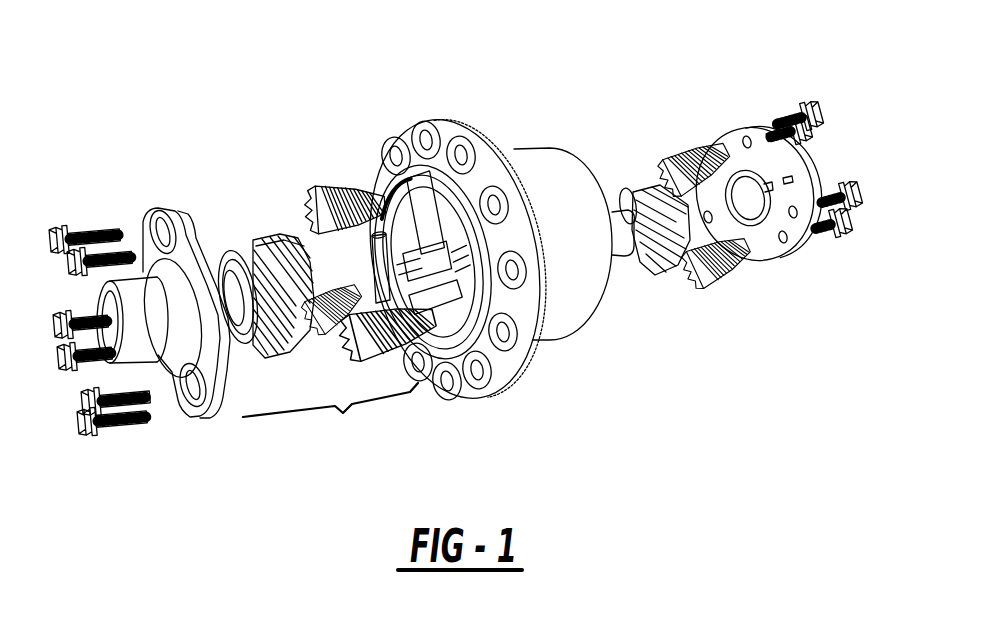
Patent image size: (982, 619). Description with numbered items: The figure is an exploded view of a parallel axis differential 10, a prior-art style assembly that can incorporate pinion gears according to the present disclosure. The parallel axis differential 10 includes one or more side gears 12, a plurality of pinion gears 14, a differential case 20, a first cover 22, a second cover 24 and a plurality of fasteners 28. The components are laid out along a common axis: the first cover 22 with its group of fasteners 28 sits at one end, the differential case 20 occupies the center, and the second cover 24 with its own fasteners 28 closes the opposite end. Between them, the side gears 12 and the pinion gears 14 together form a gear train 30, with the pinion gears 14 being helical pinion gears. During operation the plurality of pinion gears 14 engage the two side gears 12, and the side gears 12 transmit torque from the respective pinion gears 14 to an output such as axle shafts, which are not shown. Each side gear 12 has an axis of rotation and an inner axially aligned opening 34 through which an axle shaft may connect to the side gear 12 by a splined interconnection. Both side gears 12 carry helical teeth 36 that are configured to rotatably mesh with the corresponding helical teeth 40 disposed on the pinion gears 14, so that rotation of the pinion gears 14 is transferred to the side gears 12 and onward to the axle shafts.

The parallel axis differential 10 is at (538, 62).
The side gear 12 is at (617, 207).
The pinion gear 14 is at (326, 198).
The differential case 20 is at (561, 331).
The first cover 22 is at (200, 414).
The second cover 24 is at (763, 252).
The fastener 28 is at (850, 196).
The gear train 30 is at (511, 264).
The inner axially aligned opening 34 is at (233, 287).
The helical teeth 36 is at (266, 241).
The helical teeth 40 is at (348, 189).